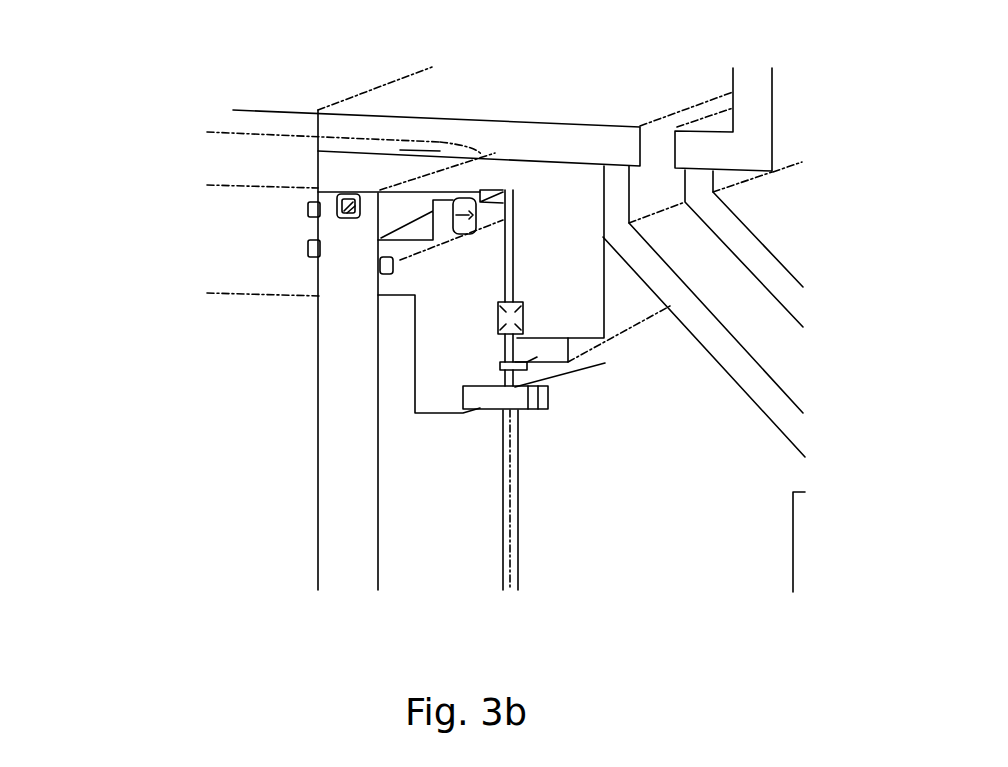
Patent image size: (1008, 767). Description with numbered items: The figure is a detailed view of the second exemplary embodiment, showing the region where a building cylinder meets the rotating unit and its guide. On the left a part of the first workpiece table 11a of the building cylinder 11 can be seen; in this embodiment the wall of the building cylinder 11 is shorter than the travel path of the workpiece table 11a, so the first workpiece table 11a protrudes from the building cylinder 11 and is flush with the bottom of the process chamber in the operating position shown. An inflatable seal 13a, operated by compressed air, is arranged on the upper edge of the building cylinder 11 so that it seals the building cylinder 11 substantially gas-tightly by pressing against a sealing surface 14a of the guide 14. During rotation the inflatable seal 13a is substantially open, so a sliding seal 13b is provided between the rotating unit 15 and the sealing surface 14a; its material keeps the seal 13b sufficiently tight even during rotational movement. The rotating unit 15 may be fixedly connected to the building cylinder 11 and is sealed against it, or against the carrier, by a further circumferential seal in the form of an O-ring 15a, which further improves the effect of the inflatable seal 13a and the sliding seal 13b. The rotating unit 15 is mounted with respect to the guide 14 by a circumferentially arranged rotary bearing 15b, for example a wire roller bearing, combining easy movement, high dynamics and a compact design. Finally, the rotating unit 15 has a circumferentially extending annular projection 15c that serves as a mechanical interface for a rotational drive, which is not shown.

The building cylinder 11 is at (357, 430).
The first workpiece table 11a is at (263, 125).
The inflatable seal 13a is at (337, 207).
The sliding seal 13b is at (468, 223).
The guide 14 is at (590, 278).
The sealing surface 14a is at (417, 168).
The rotating unit 15 is at (482, 307).
The O-ring 15a is at (380, 266).
The rotary bearing 15b is at (512, 320).
The annular projection 15c is at (513, 400).